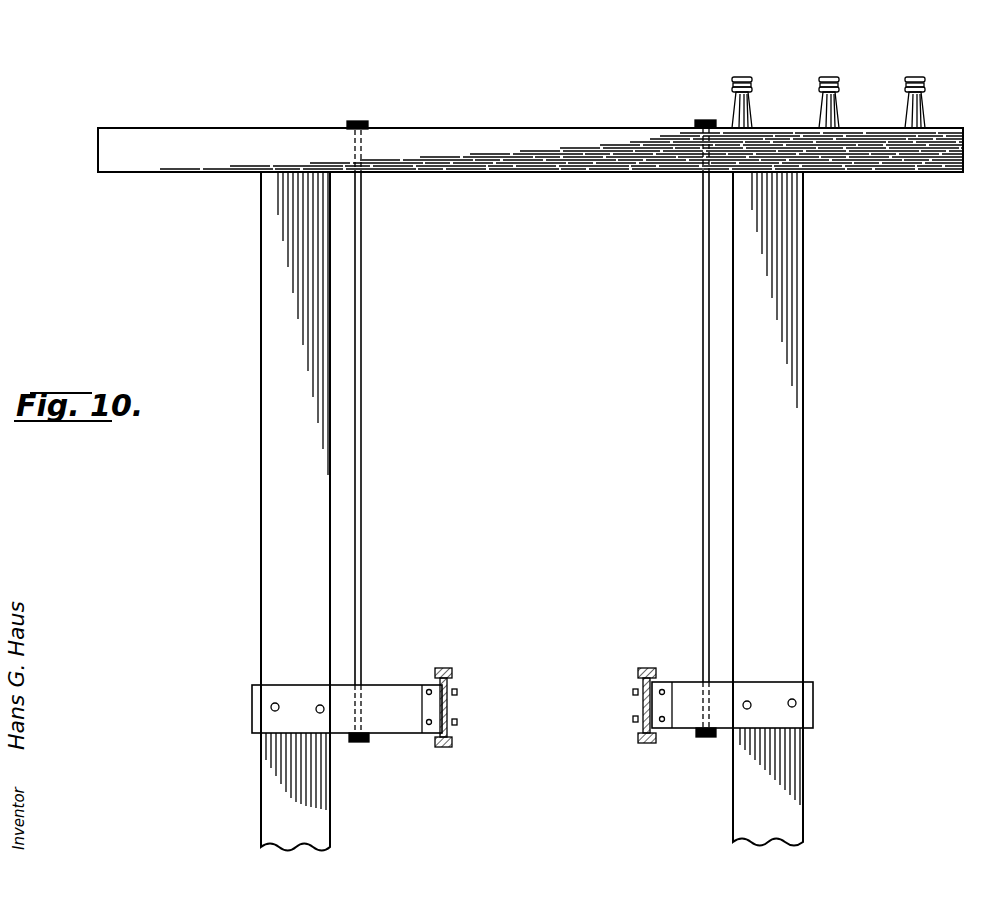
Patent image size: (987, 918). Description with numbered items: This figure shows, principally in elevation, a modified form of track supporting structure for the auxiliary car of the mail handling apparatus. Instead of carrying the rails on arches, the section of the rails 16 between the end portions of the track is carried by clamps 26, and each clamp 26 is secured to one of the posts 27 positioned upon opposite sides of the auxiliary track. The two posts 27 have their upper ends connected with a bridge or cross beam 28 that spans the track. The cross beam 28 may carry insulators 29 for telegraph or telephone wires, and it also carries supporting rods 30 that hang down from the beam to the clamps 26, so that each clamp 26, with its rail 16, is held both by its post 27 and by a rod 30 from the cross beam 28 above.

The rail 16 is at (449, 712).
The clamp 26 is at (387, 688).
The post 27 is at (273, 545).
The bridge or cross beam 28 is at (579, 172).
The insulator 29 is at (910, 98).
The supporting rod 30 is at (361, 406).